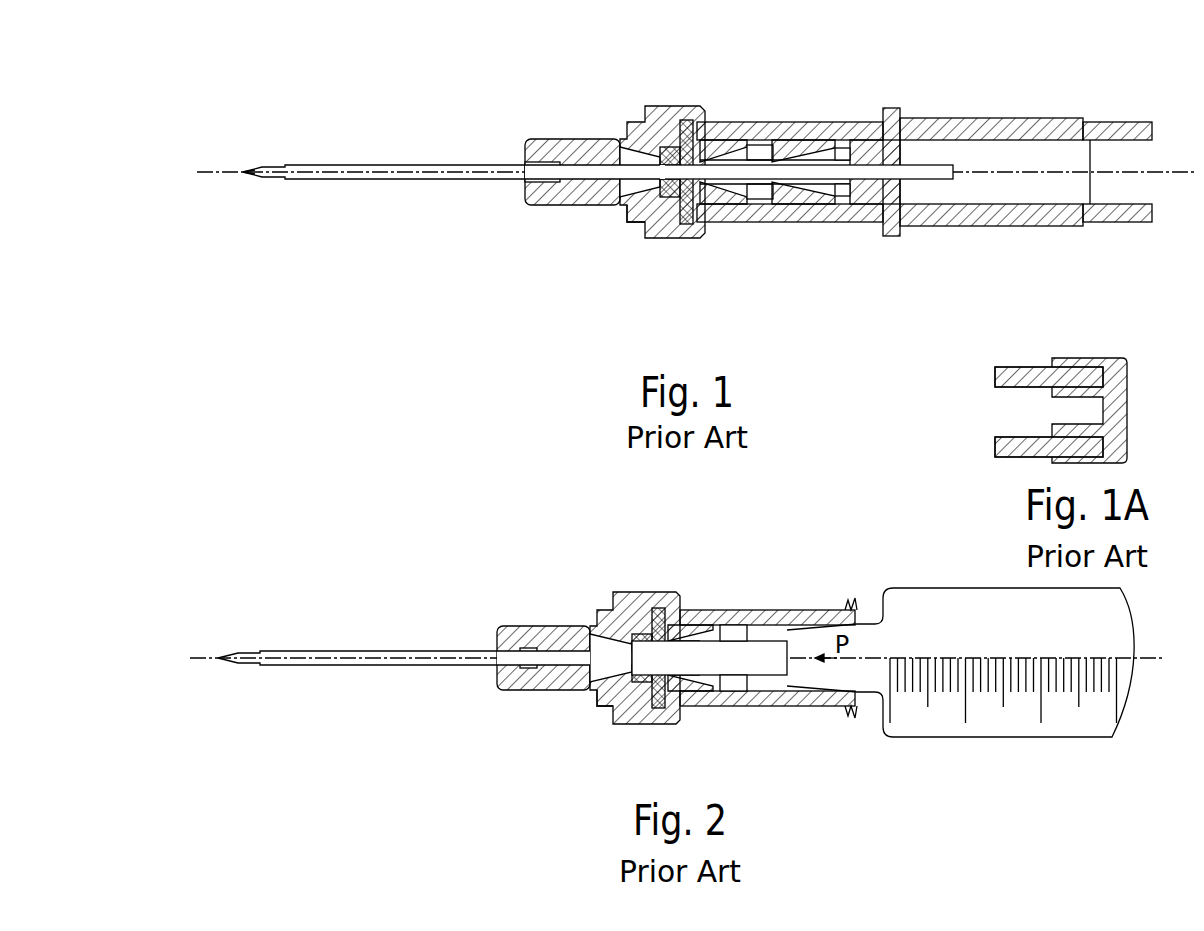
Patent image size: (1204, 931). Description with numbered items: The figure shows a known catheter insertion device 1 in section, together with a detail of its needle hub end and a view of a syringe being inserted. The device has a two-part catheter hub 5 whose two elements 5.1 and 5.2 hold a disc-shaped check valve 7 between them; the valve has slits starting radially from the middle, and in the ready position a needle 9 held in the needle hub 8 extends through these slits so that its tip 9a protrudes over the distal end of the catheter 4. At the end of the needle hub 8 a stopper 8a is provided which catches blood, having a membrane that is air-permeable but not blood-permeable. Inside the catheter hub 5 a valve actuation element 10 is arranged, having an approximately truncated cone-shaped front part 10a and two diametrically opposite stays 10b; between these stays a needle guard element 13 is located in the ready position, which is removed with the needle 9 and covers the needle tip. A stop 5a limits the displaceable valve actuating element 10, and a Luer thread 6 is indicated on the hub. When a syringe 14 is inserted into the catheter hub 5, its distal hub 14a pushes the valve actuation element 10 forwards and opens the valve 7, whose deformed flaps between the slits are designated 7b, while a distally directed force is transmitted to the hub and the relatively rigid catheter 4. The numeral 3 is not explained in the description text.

In FIG. 1, the catheter insertion device 1 is at (498, 238).
In FIG. 1, the needle hub cone 3 is at (620, 139).
In FIG. 2, the needle hub cone 3 is at (590, 676).
In FIG. 1, the catheter 4 is at (356, 165).
In FIG. 2, the catheter 4 is at (383, 651).
In FIG. 1, the catheter hub 5 is at (816, 120).
In FIG. 2, the catheter hub 5 is at (596, 602).
In FIG. 1, the catheter hub element 5.1 is at (548, 139).
In FIG. 1, the catheter hub element 5.2 is at (772, 140).
In FIG. 1, the stop 5a is at (742, 138).
In FIG. 2, the stop 5a is at (725, 625).
In FIG. 1, the Luer thread 6 is at (868, 120).
In FIG. 1, the check valve 7 is at (660, 240).
In FIG. 2, the check valve 7 is at (670, 592).
In FIG. 1, the deformed flaps 7b is at (630, 222).
In FIG. 2, the deformed flaps 7b is at (600, 706).
In FIG. 1, the needle hub 8 is at (1067, 117).
In FIG. 1A, the needle hub 8 is at (1036, 367).
In FIG. 1A, the stopper 8a is at (1127, 397).
In FIG. 1, the needle 9 is at (940, 150).
In FIG. 1, the needle tip 9a is at (245, 170).
In FIG. 1, the valve actuation element 10 is at (757, 186).
In FIG. 2, the valve actuation element 10 is at (733, 684).
In FIG. 1, the front part 10a is at (775, 205).
In FIG. 2, the front part 10a is at (675, 706).
In FIG. 1, the stays 10b is at (818, 196).
In FIG. 2, the stays 10b is at (758, 640).
In FIG. 1, the needle guard element 13 is at (850, 205).
In FIG. 2, the syringe 14 is at (988, 718).
In FIG. 2, the distal hub 14a is at (815, 692).